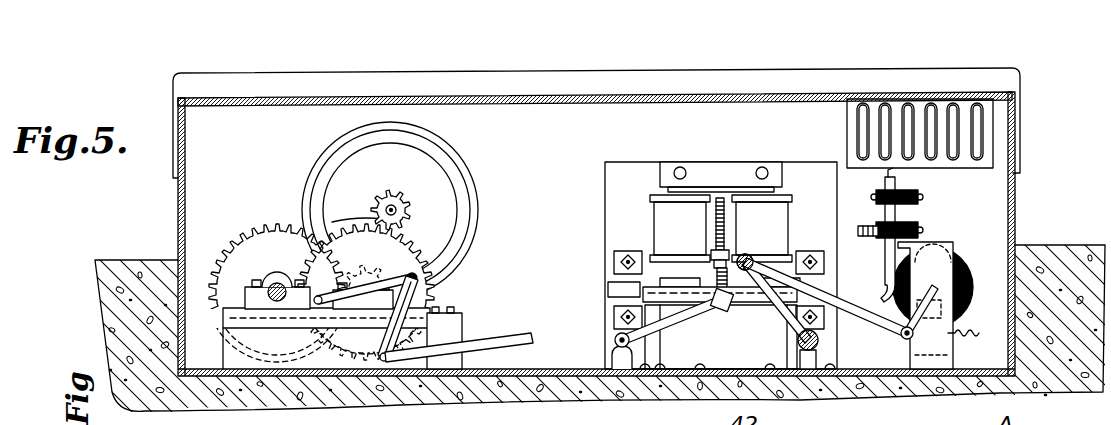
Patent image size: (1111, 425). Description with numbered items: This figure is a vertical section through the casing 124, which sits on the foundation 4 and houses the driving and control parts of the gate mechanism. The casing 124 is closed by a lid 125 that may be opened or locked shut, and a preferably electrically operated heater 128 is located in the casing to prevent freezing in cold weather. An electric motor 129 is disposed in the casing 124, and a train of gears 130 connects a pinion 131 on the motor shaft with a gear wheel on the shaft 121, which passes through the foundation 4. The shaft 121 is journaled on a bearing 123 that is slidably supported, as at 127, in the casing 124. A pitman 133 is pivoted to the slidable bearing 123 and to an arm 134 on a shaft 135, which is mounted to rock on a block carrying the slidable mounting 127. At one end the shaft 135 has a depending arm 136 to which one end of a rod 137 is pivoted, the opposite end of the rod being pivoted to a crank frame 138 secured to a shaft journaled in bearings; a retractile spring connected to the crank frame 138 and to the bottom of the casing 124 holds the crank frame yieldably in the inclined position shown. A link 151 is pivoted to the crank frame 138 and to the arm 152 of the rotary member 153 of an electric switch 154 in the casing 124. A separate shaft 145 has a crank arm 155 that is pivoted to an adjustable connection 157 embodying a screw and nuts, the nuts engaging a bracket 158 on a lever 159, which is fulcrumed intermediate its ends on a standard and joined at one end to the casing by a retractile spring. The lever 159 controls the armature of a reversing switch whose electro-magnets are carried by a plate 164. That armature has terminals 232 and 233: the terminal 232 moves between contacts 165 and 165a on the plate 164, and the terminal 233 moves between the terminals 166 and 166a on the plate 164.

The foundation 4 is at (132, 258).
The shaft 121 is at (270, 323).
The bearing 123 is at (260, 283).
The casing 124 is at (1018, 232).
The lid 125 is at (790, 94).
The slidable mounting 127 is at (210, 276).
The heater 128 is at (942, 106).
The electric motor 129 is at (458, 190).
The train of gears 130 is at (359, 216).
The pinion 131 is at (395, 194).
The pitman 133 is at (418, 262).
The arm 134 is at (440, 294).
The shaft 135 is at (458, 316).
The depending arm 136 is at (380, 338).
The rod 137 is at (533, 340).
The crank frame 138 is at (779, 314).
The shaft 145 is at (614, 340).
The link 151 is at (856, 311).
The arm 152 is at (920, 298).
The rotary member 153 is at (958, 283).
The electric switch 154 is at (940, 244).
The crank arm 155 is at (684, 322).
The adjustable connection 157 is at (726, 238).
The bracket 158 is at (702, 268).
The lever 159 is at (744, 302).
The plate 164 is at (633, 172).
The contact 165 is at (622, 254).
The contact 165a is at (614, 320).
The terminal 166 is at (808, 249).
The terminal 166a is at (828, 328).
The terminal 232 is at (610, 290).
The terminal 233 is at (843, 288).